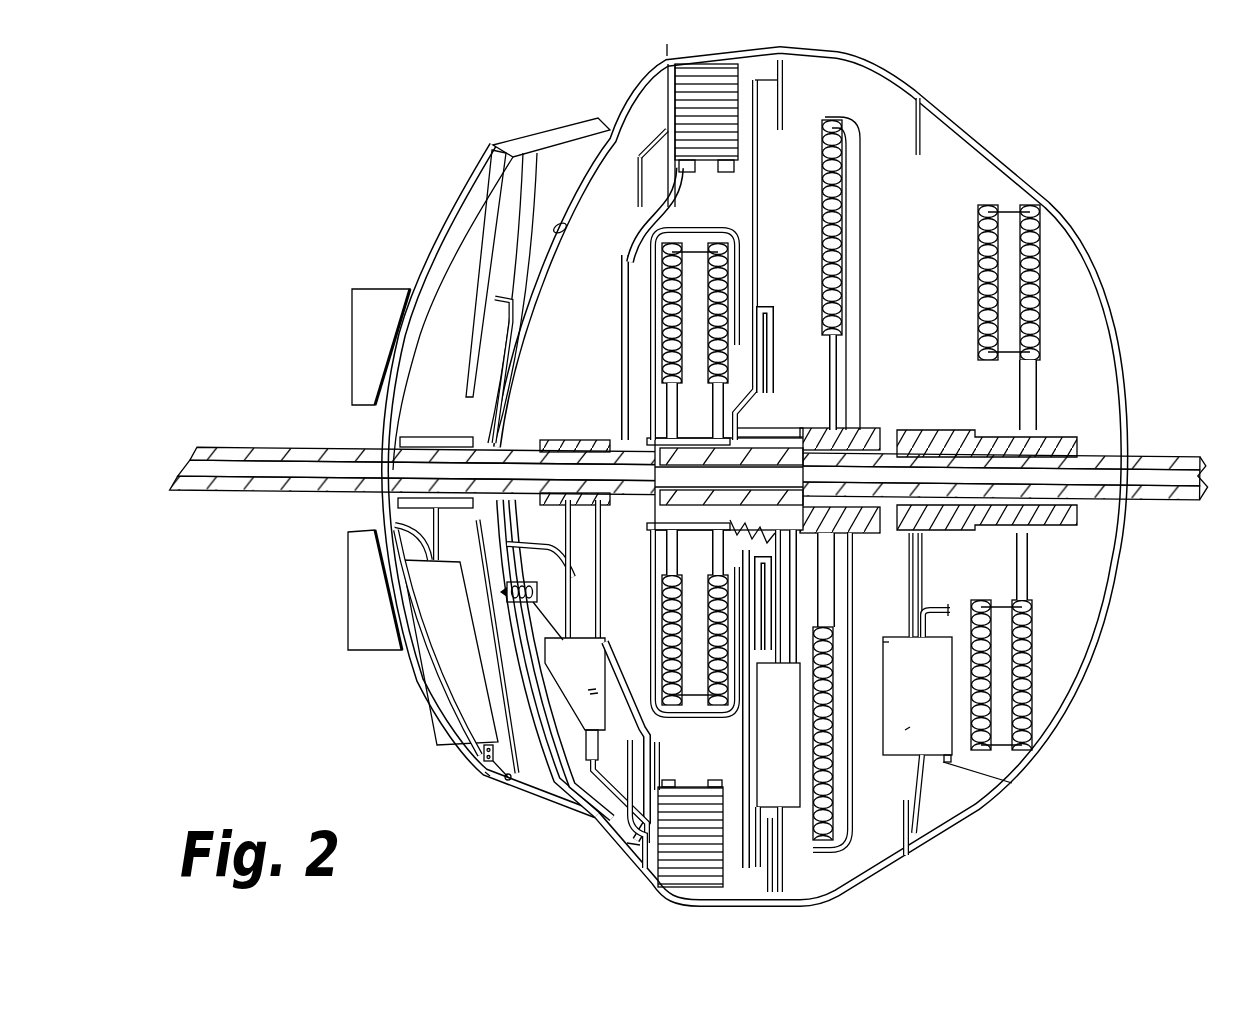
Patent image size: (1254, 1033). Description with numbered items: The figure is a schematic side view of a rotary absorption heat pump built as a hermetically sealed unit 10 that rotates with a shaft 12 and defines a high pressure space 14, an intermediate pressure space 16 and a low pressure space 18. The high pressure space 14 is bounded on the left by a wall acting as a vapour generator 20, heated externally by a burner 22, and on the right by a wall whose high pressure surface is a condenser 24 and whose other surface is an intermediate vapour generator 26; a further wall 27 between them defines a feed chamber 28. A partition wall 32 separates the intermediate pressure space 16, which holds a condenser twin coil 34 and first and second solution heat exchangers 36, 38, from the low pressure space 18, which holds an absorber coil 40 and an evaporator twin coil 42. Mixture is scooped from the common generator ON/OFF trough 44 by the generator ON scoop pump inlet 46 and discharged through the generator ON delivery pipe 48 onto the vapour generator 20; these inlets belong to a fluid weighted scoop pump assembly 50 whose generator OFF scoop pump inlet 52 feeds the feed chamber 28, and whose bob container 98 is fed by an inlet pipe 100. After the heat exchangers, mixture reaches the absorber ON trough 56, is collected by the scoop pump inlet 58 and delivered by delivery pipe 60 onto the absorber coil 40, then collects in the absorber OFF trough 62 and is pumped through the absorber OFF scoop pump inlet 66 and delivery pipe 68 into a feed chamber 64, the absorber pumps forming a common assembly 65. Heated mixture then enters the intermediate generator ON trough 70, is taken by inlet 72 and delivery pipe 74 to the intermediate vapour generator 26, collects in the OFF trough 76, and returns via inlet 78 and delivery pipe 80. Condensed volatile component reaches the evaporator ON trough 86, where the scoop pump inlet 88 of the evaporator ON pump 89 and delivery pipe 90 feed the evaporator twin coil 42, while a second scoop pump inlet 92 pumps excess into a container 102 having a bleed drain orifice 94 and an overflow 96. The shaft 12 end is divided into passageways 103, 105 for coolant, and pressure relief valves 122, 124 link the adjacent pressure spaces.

The hermetically sealed unit 10 is at (560, 95).
The shaft 12 is at (258, 447).
The high pressure space 14 is at (458, 345).
The intermediate pressure space 16 is at (583, 353).
The low pressure space 18 is at (920, 267).
The vapour generator 20 is at (428, 258).
The burner 22 is at (352, 355).
The condenser 24 is at (527, 253).
The intermediate vapour generator 26 is at (553, 232).
The further wall 27 is at (528, 173).
The feed chamber 28 is at (483, 380).
The partition wall 32 is at (752, 206).
The condenser twin coil 34 is at (670, 305).
The first solution heat exchanger 36 is at (697, 73).
The second solution heat exchanger 38 is at (687, 873).
The absorber coil 40 is at (826, 132).
The evaporator twin coil 42 is at (980, 212).
The common generator ON/OFF trough 44 is at (462, 725).
The generator ON scoop pump inlet 46 is at (508, 782).
The generator ON delivery pipe 48 is at (413, 537).
The fluid weighted scoop pump assembly 50 is at (433, 661).
The generator OFF scoop pump inlet 52 is at (490, 778).
The absorber ON trough 56 is at (745, 853).
The scoop pump inlet 58 is at (760, 862).
The delivery pipe 60 is at (778, 668).
The absorber OFF trough 62 is at (833, 880).
The feed chamber 64 is at (758, 343).
The common assembly 65 is at (800, 862).
The absorber OFF scoop pump inlet 66 is at (786, 853).
The delivery pipe 68 is at (773, 548).
The intermediate generator ON trough 70 is at (643, 793).
The inlet 72 is at (647, 730).
The delivery pipe 74 is at (512, 546).
The OFF trough 76 is at (627, 843).
The inlet 78 is at (635, 831).
The delivery pipe 80 is at (622, 405).
The evaporator ON trough 86 is at (940, 814).
The scoop pump inlet 88 is at (913, 828).
The evaporator ON pump 89 is at (907, 731).
The delivery pipe 90 is at (932, 607).
The second scoop pump inlet 92 is at (920, 830).
The bleed drain orifice 94 is at (1005, 778).
The overflow 96 is at (884, 642).
The bob container 98 is at (423, 601).
The inlet pipe 100 is at (488, 752).
The container 102 is at (937, 685).
The passageway 103 is at (1188, 458).
The passageway 105 is at (1168, 483).
The pressure relief valve 122 is at (575, 699).
The pressure relief valve 124 is at (737, 527).